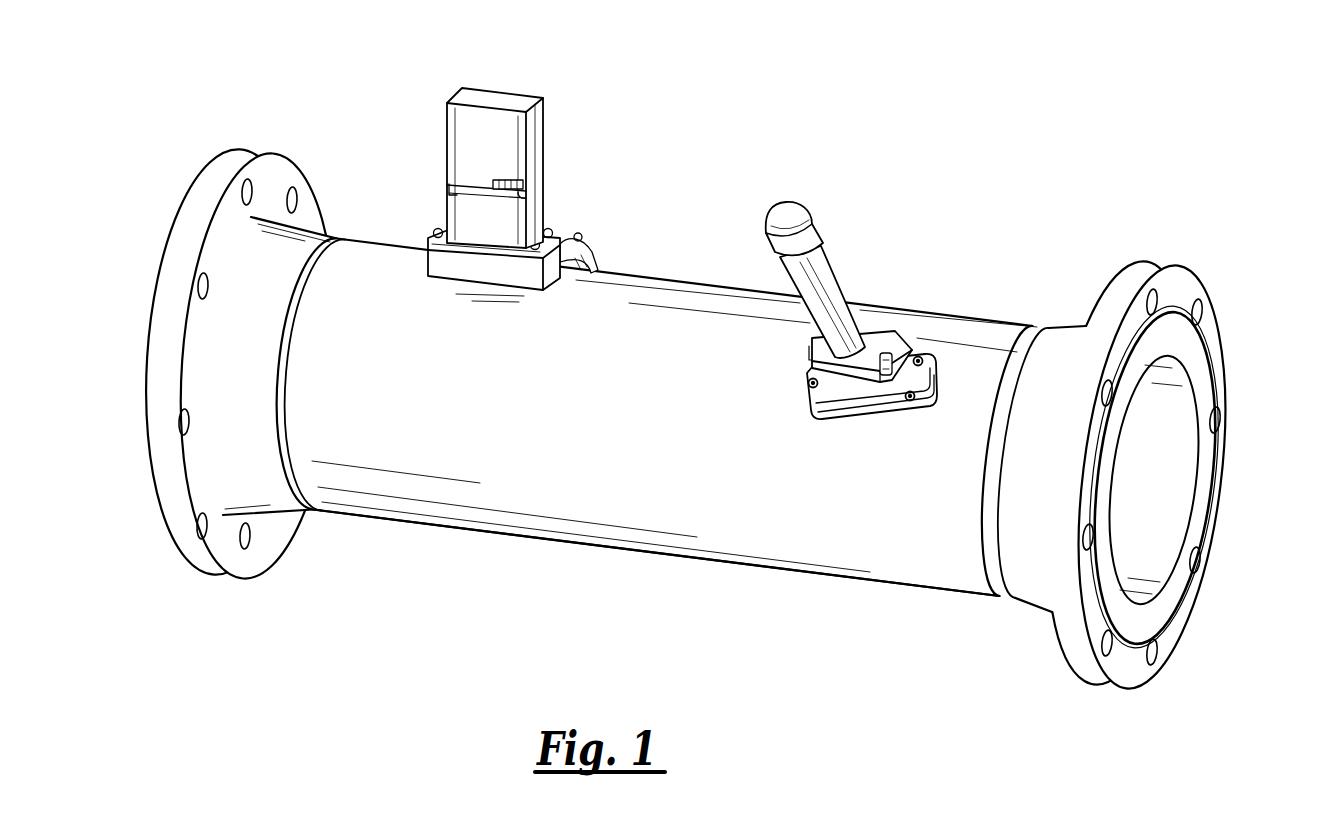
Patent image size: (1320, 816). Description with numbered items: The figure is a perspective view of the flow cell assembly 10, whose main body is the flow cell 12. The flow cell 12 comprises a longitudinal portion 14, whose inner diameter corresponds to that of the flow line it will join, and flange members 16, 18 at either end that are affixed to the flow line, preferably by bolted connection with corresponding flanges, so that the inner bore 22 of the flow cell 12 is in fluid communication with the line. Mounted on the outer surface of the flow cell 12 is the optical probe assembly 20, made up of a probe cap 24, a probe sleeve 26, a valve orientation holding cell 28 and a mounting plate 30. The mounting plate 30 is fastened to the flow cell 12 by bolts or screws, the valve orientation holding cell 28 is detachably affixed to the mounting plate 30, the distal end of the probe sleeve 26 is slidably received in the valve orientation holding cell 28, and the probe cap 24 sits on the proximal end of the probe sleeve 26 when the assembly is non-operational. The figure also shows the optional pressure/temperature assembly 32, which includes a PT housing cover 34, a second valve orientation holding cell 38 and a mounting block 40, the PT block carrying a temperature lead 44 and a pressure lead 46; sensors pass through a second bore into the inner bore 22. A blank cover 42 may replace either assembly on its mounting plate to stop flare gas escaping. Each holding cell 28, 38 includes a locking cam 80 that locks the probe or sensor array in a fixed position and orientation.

The flow cell assembly 10 is at (702, 374).
The flow cell 12 is at (645, 477).
The longitudinal portion 14 is at (500, 495).
The flange member 16 is at (190, 191).
The flange member 18 is at (1170, 632).
The optical probe assembly 20 is at (842, 380).
The inner bore 22 is at (1155, 465).
The probe cap 24 is at (795, 193).
The probe sleeve 26 is at (784, 272).
The valve orientation holding cell 28 is at (887, 335).
The mounting plate 30 is at (833, 410).
The pressure/temperature assembly 32 is at (499, 154).
The PT housing cover 34 is at (474, 161).
The second valve orientation holding cell 38 is at (469, 231).
The mounting block 40 is at (428, 265).
The blank cover 42 is at (593, 242).
The temperature lead 44 is at (450, 186).
The pressure lead 46 is at (520, 203).
The locking cam 80 is at (893, 362).